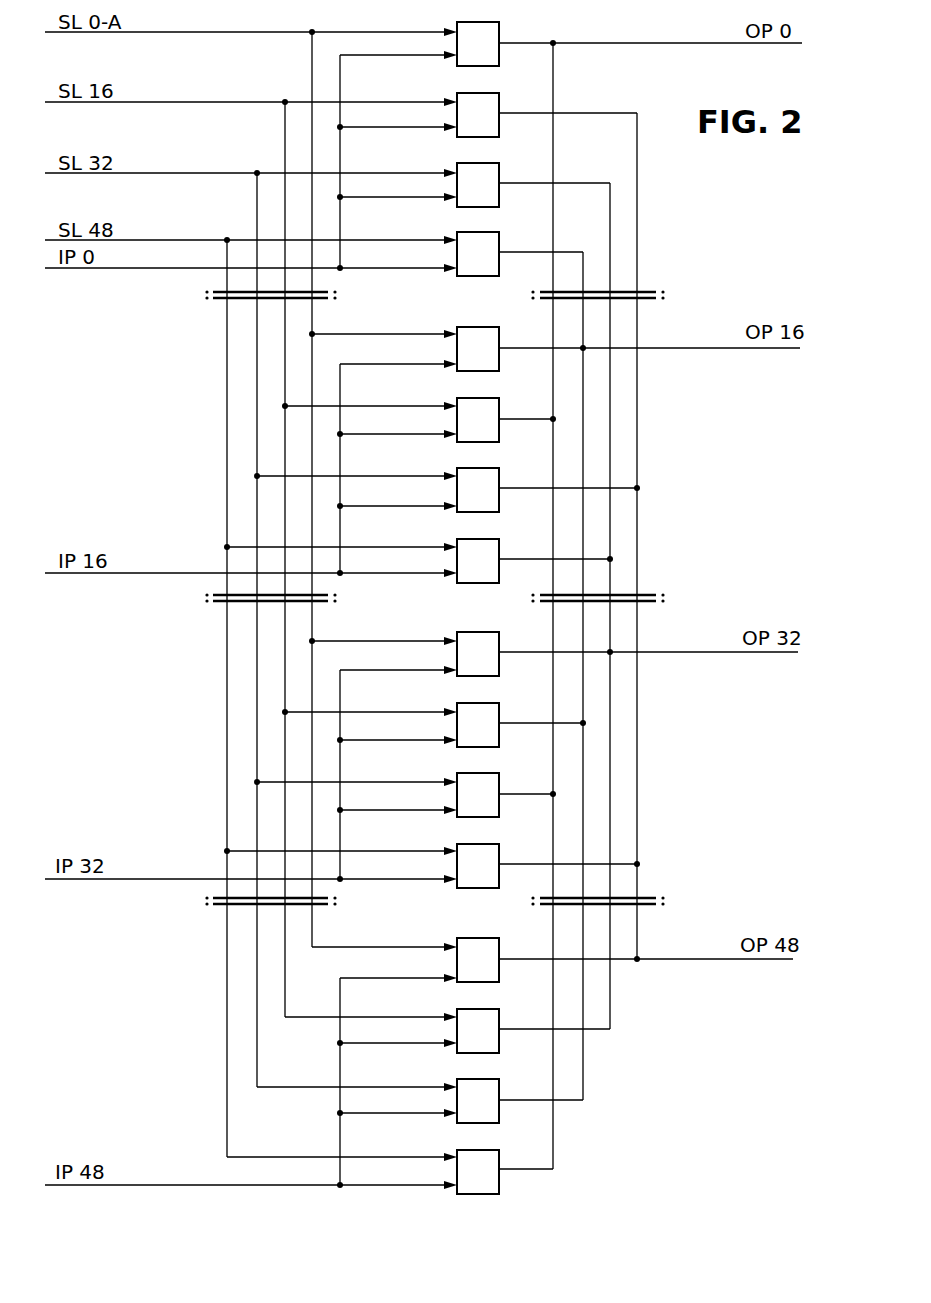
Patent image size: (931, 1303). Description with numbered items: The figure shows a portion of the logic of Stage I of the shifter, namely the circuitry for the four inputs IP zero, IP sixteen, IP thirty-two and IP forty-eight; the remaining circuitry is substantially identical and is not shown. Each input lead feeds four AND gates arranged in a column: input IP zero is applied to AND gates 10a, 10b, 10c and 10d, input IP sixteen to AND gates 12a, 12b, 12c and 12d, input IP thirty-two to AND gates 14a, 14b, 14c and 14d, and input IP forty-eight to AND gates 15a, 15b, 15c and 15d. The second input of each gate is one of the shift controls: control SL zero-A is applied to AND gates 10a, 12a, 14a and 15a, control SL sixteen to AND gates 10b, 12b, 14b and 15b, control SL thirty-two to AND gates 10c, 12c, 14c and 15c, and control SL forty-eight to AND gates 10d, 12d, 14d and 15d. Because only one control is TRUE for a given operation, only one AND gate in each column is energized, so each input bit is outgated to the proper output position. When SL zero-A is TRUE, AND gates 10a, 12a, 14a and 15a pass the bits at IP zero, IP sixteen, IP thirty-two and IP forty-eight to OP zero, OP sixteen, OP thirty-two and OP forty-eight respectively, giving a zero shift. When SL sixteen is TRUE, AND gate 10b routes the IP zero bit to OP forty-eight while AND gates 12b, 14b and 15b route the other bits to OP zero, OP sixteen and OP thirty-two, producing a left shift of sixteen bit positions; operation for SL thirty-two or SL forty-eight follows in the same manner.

The AND gate 10a is at (493, 37).
The AND gate 10b is at (493, 108).
The AND gate 10c is at (493, 178).
The AND gate 10d is at (493, 247).
The AND gate 12a is at (493, 342).
The AND gate 12b is at (493, 413).
The AND gate 12c is at (493, 483).
The AND gate 12d is at (493, 554).
The AND gate 14a is at (493, 647).
The AND gate 14b is at (493, 718).
The AND gate 14c is at (493, 788).
The AND gate 14d is at (493, 859).
The AND gate 15a is at (493, 953).
The AND gate 15b is at (493, 1024).
The AND gate 15c is at (493, 1094).
The AND gate 15d is at (493, 1165).